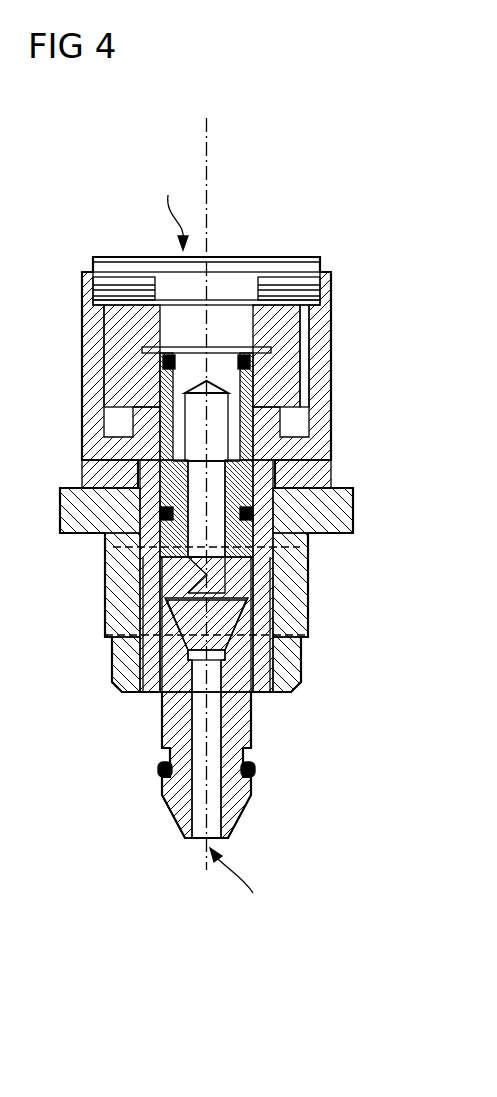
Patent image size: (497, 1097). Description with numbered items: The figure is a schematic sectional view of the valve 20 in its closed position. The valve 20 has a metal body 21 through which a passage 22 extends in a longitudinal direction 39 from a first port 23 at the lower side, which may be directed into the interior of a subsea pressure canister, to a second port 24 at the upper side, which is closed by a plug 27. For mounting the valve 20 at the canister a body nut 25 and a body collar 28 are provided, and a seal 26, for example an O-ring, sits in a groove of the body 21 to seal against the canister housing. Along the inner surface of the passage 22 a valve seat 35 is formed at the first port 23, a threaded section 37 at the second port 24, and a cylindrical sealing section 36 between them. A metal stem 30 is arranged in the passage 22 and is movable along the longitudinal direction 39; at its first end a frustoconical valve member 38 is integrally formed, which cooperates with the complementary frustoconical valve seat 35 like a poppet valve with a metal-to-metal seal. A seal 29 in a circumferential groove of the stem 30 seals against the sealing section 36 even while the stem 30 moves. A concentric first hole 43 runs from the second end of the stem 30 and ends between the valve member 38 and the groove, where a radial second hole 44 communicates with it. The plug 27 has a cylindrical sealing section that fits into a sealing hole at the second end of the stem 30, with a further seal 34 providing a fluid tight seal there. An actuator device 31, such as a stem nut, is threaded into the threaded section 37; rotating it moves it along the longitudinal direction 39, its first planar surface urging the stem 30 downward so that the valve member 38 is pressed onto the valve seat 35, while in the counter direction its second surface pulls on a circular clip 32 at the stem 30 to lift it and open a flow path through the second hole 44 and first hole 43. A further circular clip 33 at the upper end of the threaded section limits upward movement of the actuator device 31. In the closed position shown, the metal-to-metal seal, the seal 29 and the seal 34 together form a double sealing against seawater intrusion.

The valve 20 is at (311, 203).
The body 21 is at (333, 440).
The passage 22 is at (222, 722).
The first port 23 is at (242, 884).
The second port 24 is at (171, 205).
The body nut 25 is at (309, 597).
The seal 26 is at (254, 770).
The plug 27 is at (242, 266).
The body collar 28 is at (290, 677).
The seal 29 is at (290, 520).
The stem 30 is at (245, 515).
The actuator device 31 is at (295, 378).
The circular clip 32 is at (272, 350).
The further circular clip 33 is at (312, 303).
The further seal 34 is at (258, 362).
The valve seat 35 is at (178, 640).
The sealing section 36 is at (165, 452).
The threaded section 37 is at (108, 372).
The valve member 38 is at (240, 645).
The longitudinal direction 39 is at (208, 131).
The first hole 43 is at (165, 512).
The second hole 44 is at (200, 585).